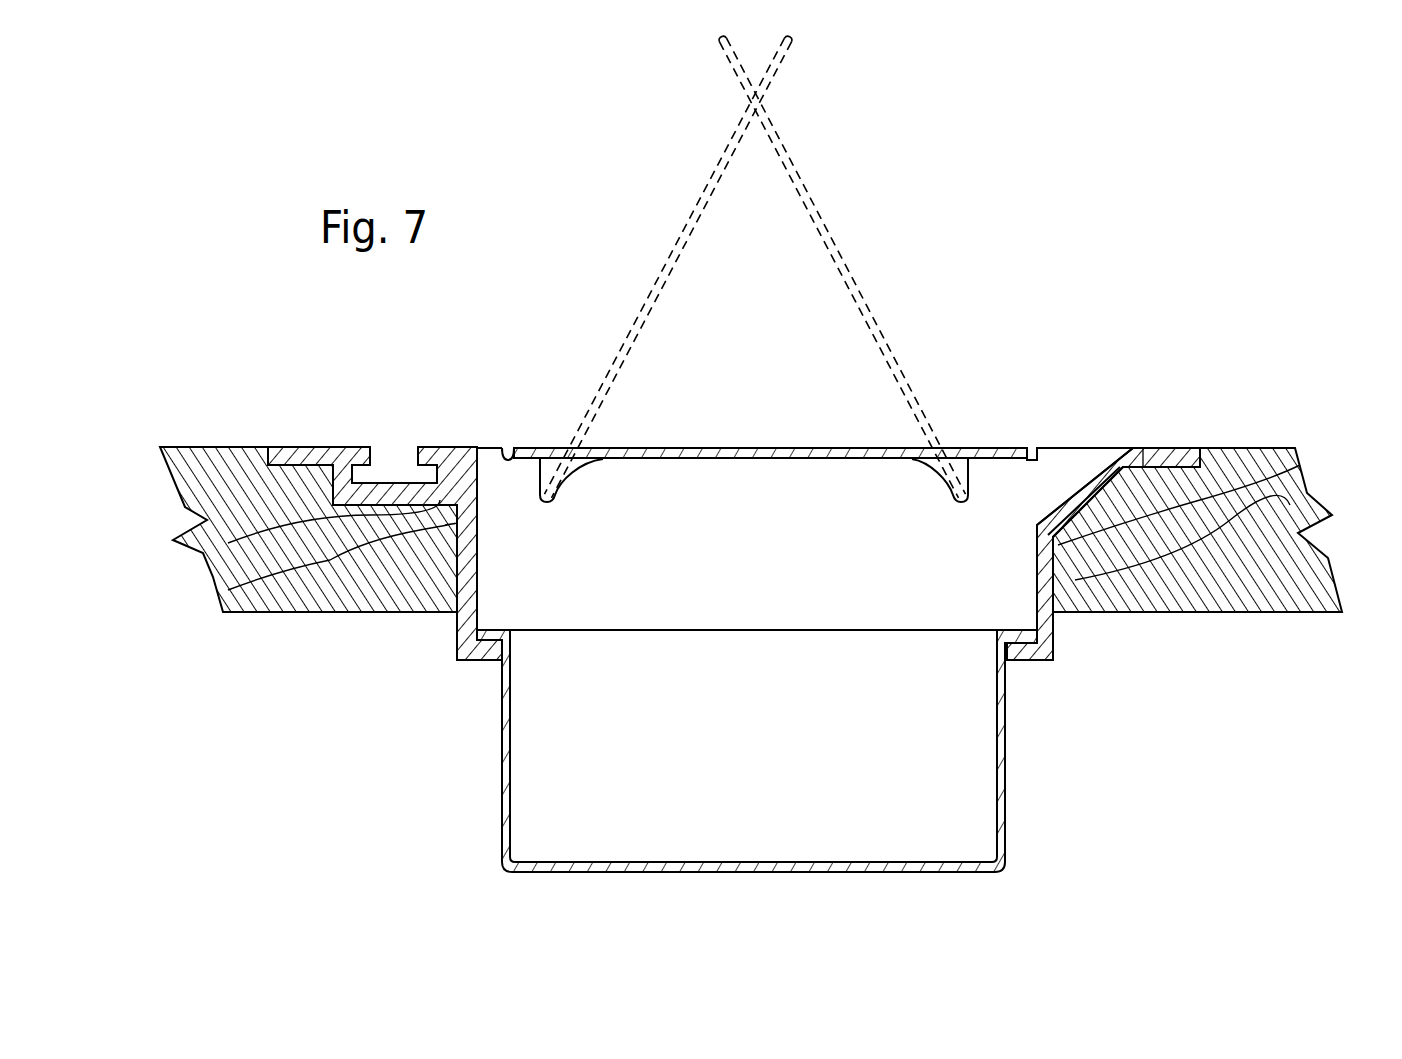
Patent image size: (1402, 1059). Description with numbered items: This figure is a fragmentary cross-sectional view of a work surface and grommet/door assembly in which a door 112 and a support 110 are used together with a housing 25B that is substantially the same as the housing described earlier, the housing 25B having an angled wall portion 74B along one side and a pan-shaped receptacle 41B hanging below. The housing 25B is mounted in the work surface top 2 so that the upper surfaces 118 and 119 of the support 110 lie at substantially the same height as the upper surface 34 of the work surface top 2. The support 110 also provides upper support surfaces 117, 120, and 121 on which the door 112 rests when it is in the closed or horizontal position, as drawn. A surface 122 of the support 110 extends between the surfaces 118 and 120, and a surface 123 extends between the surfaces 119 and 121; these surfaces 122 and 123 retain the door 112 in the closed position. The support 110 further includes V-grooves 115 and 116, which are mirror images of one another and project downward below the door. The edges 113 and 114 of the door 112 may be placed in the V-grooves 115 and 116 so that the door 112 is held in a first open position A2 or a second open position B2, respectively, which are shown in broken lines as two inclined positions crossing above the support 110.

The work surface top 2 is at (1283, 447).
The upper surface 34 is at (1243, 447).
The housing 25B is at (457, 640).
The angled wall portion 74B is at (1087, 455).
The receptacle 41B is at (502, 783).
The door 112 is at (700, 448).
The upper support surface 117 is at (768, 448).
The upper surface 118 is at (487, 447).
The surface 122 is at (504, 450).
The edge 113 is at (514, 448).
The upper support surface 120 is at (525, 448).
The V-groove 115 is at (570, 458).
The V-groove 116 is at (938, 447).
The upper support surface 121 is at (993, 447).
The edge 114 is at (1033, 447).
The surface 123 is at (1047, 447).
The support 110 is at (1068, 447).
The upper surface 119 is at (1085, 447).
The first open position A2 is at (715, 172).
The second open position B2 is at (807, 180).